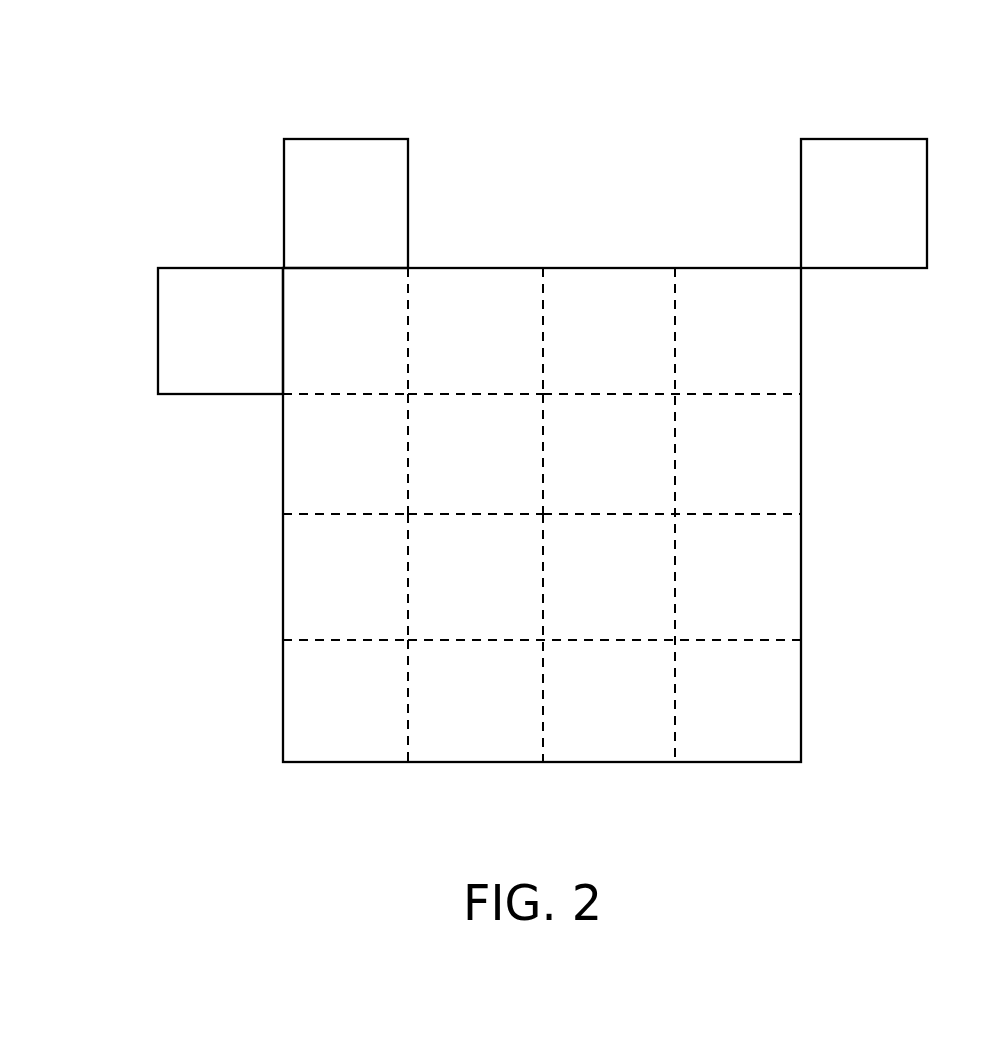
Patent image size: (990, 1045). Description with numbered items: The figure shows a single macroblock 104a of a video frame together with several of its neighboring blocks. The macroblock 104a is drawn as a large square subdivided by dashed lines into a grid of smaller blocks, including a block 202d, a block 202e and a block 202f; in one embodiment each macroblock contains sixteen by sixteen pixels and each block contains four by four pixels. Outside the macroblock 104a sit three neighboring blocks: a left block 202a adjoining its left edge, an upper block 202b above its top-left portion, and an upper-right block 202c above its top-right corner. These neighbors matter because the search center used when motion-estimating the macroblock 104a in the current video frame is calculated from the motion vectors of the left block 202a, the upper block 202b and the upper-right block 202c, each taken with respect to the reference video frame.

The macroblock 104a is at (801, 491).
The left block 202a is at (158, 332).
The upper block 202b is at (347, 139).
The upper-right block 202c is at (863, 139).
The block 202d is at (345, 454).
The block 202e is at (475, 454).
The block 202f is at (345, 577).